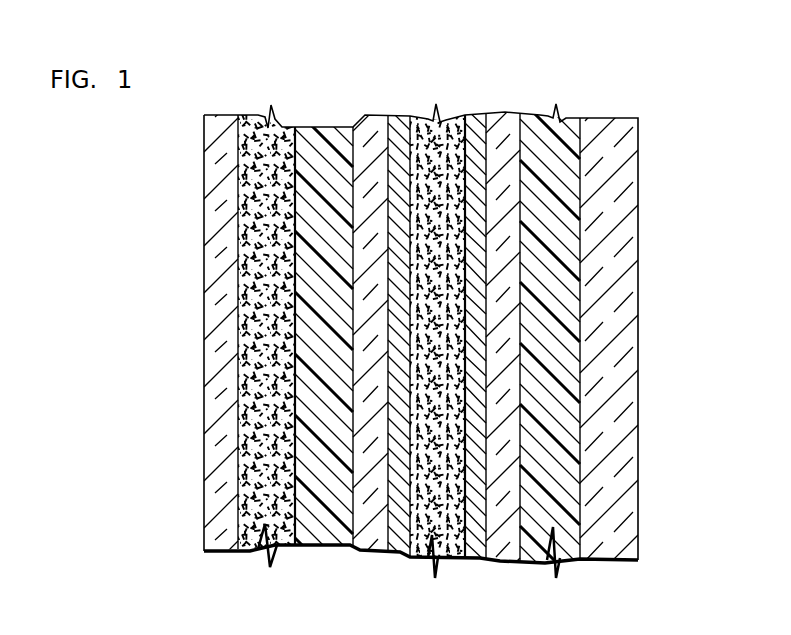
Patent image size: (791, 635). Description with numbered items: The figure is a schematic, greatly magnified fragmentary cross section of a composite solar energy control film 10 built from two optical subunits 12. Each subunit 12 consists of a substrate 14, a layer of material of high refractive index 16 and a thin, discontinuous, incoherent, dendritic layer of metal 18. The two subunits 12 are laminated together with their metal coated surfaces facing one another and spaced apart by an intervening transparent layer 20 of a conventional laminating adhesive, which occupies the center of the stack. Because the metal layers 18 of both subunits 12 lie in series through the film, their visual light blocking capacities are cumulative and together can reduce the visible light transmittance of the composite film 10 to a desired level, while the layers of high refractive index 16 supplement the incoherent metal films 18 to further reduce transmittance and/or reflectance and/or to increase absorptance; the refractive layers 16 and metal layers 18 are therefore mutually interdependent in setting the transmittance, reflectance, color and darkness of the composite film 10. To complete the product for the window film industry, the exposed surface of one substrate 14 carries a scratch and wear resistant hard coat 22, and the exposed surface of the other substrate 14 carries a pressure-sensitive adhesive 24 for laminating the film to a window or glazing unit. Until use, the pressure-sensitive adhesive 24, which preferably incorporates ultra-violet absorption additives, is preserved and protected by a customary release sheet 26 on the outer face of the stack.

The composite film 10 is at (295, 38).
The optical subunit 12 is at (295, 92).
The substrate 14 is at (315, 547).
The layer of material of high refractive index 16 is at (363, 548).
The dendritic layer of metal 18 is at (393, 558).
The transparent layer of laminating adhesive 20 is at (432, 570).
The hard coat 22 is at (625, 497).
The pressure-sensitive adhesive 24 is at (254, 552).
The release sheet 26 is at (205, 476).